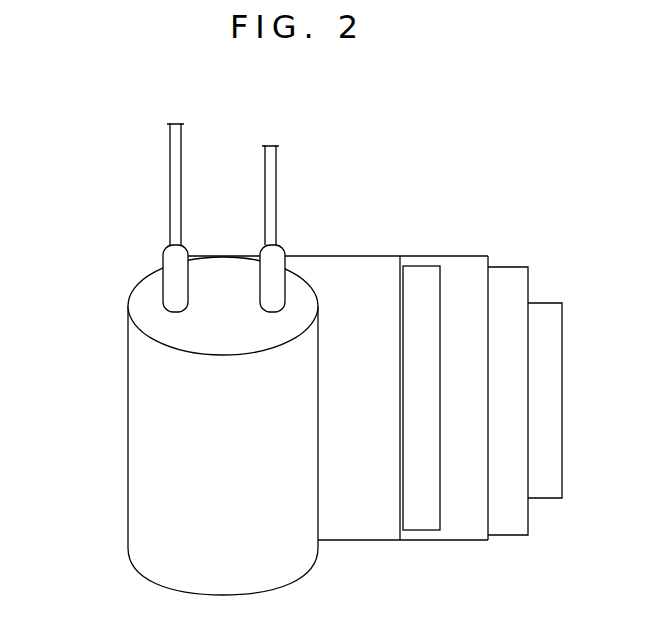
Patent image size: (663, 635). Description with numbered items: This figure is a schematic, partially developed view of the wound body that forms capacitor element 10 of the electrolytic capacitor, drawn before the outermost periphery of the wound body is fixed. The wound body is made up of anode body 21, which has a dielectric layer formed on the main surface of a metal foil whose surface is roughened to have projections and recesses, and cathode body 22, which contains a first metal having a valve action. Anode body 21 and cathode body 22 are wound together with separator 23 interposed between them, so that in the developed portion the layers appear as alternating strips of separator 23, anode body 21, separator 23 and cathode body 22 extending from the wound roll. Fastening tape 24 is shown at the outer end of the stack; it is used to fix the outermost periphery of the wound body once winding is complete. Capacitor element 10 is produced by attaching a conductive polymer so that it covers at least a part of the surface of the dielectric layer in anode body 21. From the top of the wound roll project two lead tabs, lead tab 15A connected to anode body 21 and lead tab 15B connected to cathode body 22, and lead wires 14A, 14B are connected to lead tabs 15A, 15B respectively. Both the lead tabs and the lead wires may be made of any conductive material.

The capacitor element 10 is at (399, 129).
The lead wire 14A is at (170, 161).
The lead wire 14B is at (278, 154).
The lead tab 15A is at (172, 264).
The lead tab 15B is at (285, 262).
The anode body 21 is at (428, 512).
The cathode body 22 is at (508, 528).
The separator 23 is at (371, 512).
The fastening tape 24 is at (543, 485).